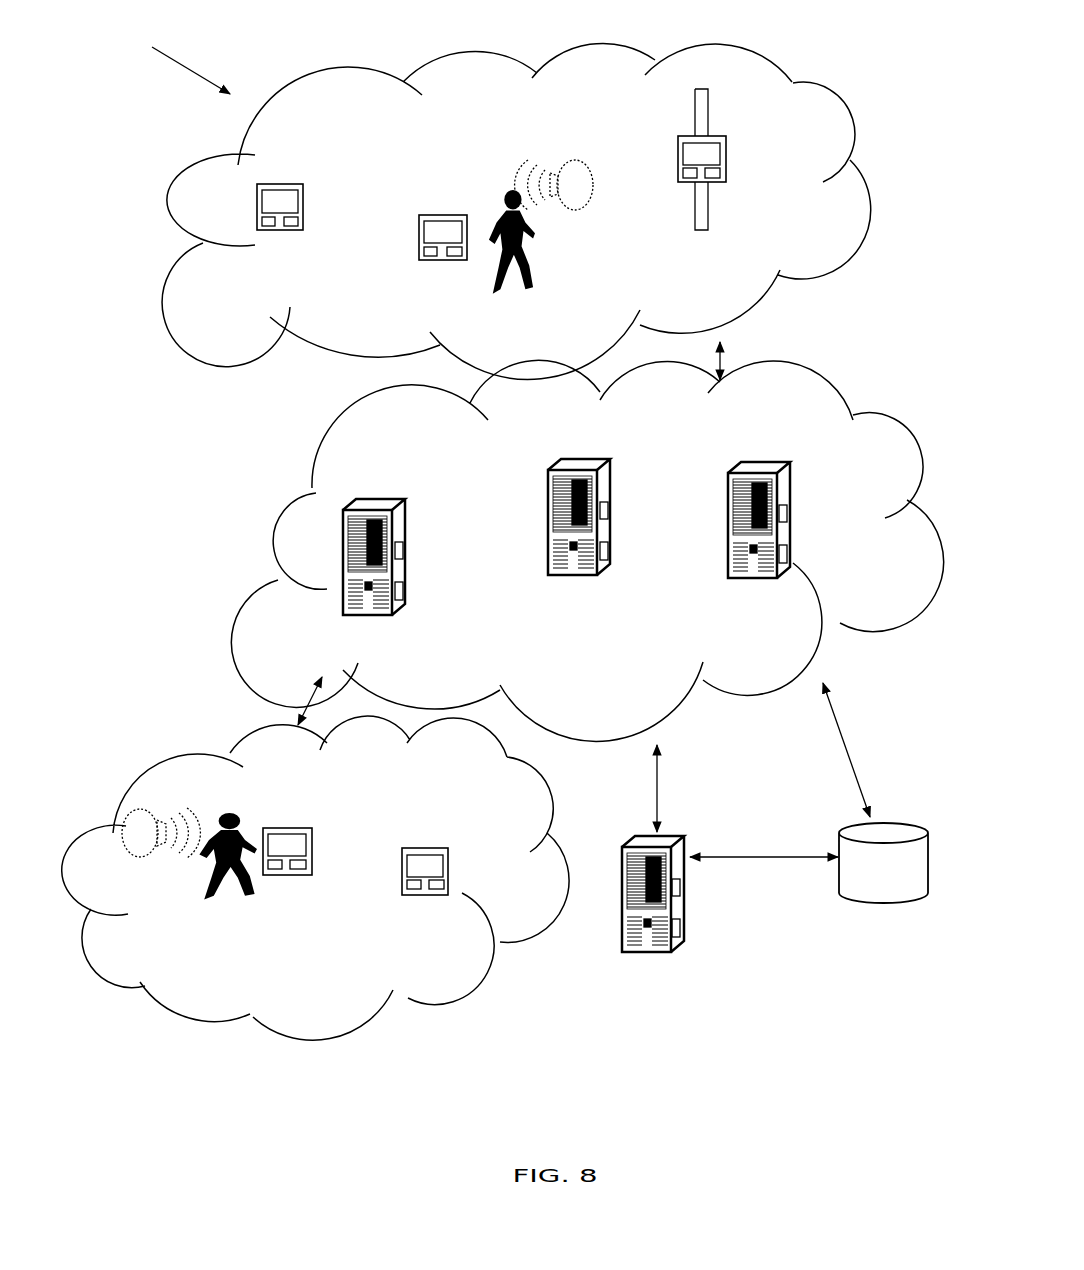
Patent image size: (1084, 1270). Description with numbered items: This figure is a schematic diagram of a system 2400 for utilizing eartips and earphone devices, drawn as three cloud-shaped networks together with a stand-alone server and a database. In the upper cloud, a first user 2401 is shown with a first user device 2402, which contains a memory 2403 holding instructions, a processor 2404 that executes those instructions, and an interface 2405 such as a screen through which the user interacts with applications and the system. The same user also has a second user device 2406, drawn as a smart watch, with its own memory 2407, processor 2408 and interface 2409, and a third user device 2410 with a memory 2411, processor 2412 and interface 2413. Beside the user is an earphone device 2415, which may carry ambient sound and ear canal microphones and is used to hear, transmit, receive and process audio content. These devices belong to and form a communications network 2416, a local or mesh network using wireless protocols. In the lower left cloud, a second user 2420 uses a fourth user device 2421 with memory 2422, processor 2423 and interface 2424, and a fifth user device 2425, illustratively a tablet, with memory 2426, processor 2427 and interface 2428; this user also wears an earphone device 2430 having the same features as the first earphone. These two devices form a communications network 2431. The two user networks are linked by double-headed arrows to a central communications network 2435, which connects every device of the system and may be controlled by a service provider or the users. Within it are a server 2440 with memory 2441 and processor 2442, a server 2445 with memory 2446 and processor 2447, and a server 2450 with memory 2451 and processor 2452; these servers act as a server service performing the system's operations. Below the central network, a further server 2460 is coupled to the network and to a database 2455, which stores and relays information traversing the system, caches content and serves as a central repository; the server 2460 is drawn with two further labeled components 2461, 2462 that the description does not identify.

The system 2400 is at (168, 61).
The first user 2401 is at (525, 295).
The first user device 2402 is at (417, 243).
The memory 2403 is at (430, 256).
The processor 2404 is at (455, 256).
The interface 2405 is at (444, 222).
The second user device 2406 is at (697, 156).
The memory 2407 is at (690, 182).
The processor 2408 is at (715, 178).
The interface 2409 is at (718, 144).
The third user device 2410 is at (295, 215).
The memory 2411 is at (268, 226).
The processor 2412 is at (290, 226).
The interface 2413 is at (279, 192).
The earphone device 2415 is at (571, 160).
The communications network 2416 is at (176, 212).
The second user 2420 is at (203, 900).
The fourth user device 2421 is at (304, 854).
The memory 2422 is at (274, 869).
The processor 2423 is at (298, 869).
The interface 2424 is at (287, 836).
The fifth user device 2425 is at (439, 882).
The memory 2426 is at (412, 889).
The processor 2427 is at (437, 889).
The interface 2428 is at (425, 857).
The earphone device 2430 is at (137, 810).
The communications network 2431 is at (180, 1020).
The communications network 2435 is at (258, 537).
The server 2440 is at (389, 557).
The memory 2441 is at (403, 550).
The processor 2442 is at (403, 591).
The server 2445 is at (577, 517).
The memory 2446 is at (608, 510).
The processor 2447 is at (608, 551).
The server 2450 is at (756, 519).
The memory 2451 is at (787, 513).
The processor 2452 is at (787, 553).
The database 2455 is at (883, 863).
The server 2460 is at (670, 894).
The interface port 2461 is at (680, 926).
The interface port 2462 is at (680, 886).